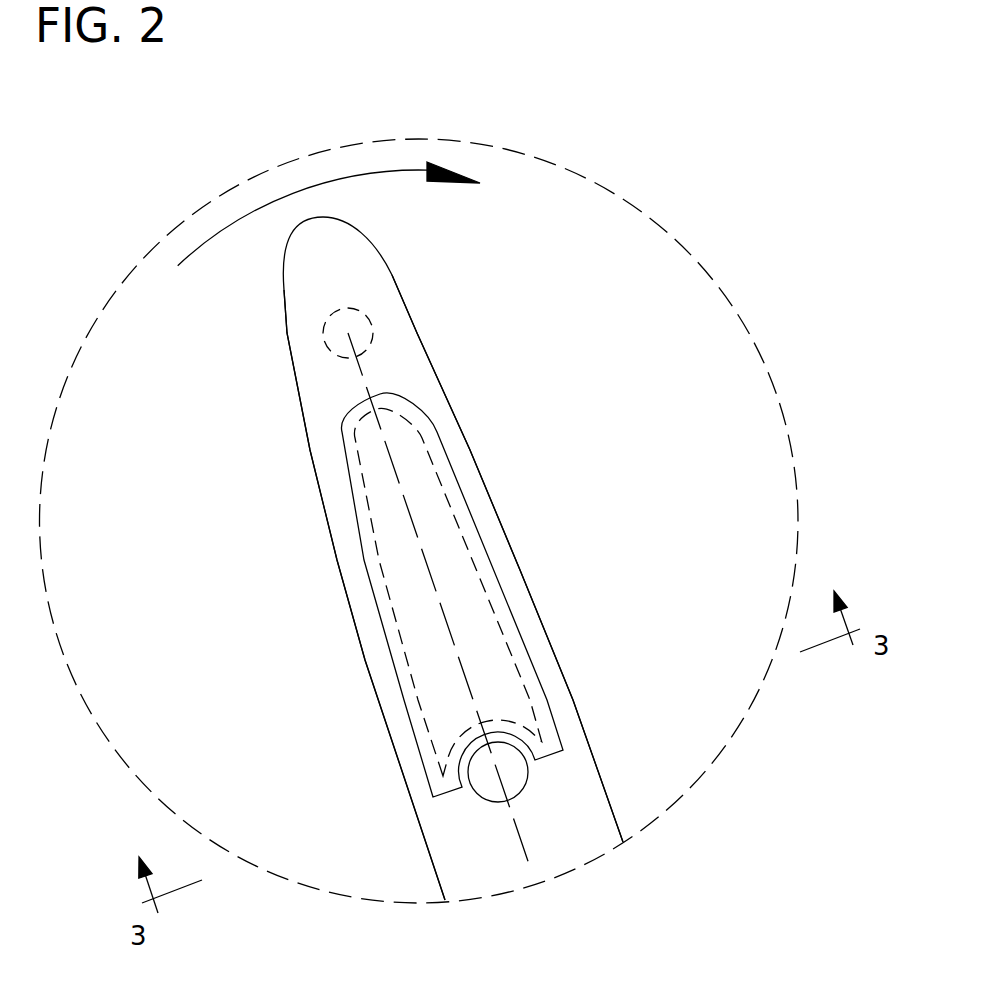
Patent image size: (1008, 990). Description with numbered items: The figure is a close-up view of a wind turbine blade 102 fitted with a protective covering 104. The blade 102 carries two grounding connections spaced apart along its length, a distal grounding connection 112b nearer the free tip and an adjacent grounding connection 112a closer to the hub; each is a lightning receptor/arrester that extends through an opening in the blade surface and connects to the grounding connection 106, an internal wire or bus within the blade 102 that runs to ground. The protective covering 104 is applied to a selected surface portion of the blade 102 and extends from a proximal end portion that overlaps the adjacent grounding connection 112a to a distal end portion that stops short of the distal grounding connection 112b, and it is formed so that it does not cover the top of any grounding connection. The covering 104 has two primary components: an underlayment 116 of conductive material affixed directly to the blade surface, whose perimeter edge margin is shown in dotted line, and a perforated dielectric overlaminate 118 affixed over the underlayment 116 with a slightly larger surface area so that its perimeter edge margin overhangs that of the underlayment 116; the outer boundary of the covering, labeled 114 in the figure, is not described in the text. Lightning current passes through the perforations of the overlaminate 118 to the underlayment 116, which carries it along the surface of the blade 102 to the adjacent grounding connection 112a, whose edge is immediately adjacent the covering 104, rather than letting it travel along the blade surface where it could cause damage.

The blade 102 is at (628, 717).
The protective covering 104 is at (447, 397).
The grounding connection 106 is at (518, 840).
The adjacent grounding connection 112a is at (482, 797).
The distal grounding connection 112b is at (361, 314).
The slot wall 114 is at (487, 473).
The underlayment 116 is at (380, 579).
The overlaminate 118 is at (495, 552).